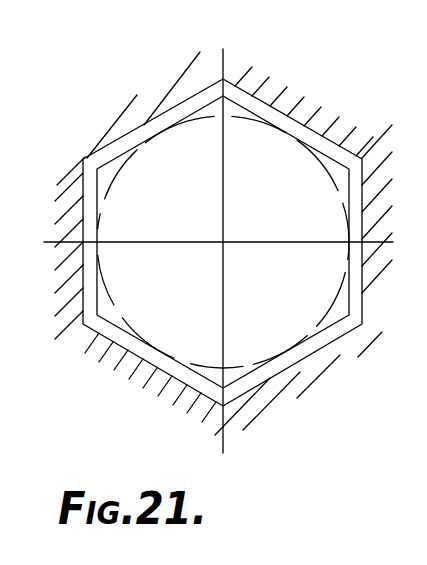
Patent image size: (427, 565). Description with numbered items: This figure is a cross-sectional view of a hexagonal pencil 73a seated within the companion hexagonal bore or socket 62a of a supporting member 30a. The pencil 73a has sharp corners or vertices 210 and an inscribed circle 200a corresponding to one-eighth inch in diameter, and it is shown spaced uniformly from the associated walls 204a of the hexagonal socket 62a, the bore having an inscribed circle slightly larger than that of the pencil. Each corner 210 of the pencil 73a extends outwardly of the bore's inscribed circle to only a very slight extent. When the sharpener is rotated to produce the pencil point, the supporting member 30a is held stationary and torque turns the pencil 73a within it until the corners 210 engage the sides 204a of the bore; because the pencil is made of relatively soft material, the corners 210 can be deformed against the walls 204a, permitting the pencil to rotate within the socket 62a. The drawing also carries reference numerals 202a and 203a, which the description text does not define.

The corners 210 is at (86, 157).
The hexagonal wall 202a is at (336, 156).
The supporting member 30a is at (291, 96).
The inscribed circle 200a is at (167, 132).
The pencil 73a is at (188, 139).
The hexagonal bore 62a is at (233, 83).
The side wall 203a is at (160, 353).
The walls 204a is at (324, 346).